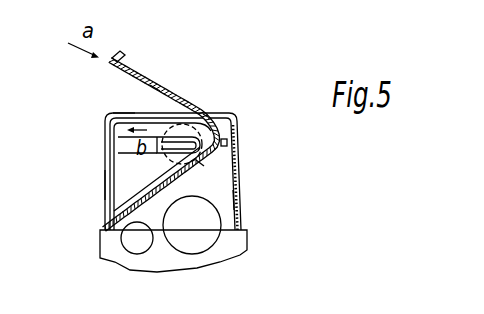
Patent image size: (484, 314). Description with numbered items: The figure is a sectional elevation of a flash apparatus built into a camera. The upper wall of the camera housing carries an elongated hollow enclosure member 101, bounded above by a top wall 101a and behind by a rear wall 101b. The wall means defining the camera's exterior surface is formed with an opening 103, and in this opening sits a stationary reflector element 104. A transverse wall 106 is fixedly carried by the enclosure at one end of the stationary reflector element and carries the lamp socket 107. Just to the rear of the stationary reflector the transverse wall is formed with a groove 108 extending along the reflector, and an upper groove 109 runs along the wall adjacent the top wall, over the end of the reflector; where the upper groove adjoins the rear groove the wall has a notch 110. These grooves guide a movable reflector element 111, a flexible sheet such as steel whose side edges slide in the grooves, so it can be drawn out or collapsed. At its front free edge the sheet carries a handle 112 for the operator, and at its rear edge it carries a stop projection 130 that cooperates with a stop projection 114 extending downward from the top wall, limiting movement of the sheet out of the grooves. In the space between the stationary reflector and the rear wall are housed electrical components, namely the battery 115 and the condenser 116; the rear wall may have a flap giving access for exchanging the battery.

The enclosure member 101 is at (241, 112).
The top wall 101a is at (131, 117).
The rear wall 101b is at (233, 200).
The opening 103 is at (108, 178).
The stationary reflector element 104 is at (170, 172).
The transverse wall 106 is at (138, 167).
The lamp socket 107 is at (164, 143).
The groove 108 is at (204, 173).
The upper groove 109 is at (168, 116).
The notch 110 is at (207, 115).
The movable reflector element 111 is at (160, 84).
The handle 112 is at (117, 52).
The stop projection 114 is at (233, 127).
The battery 115 is at (213, 224).
The condenser 116 is at (143, 250).
The stop projection 130 is at (227, 141).